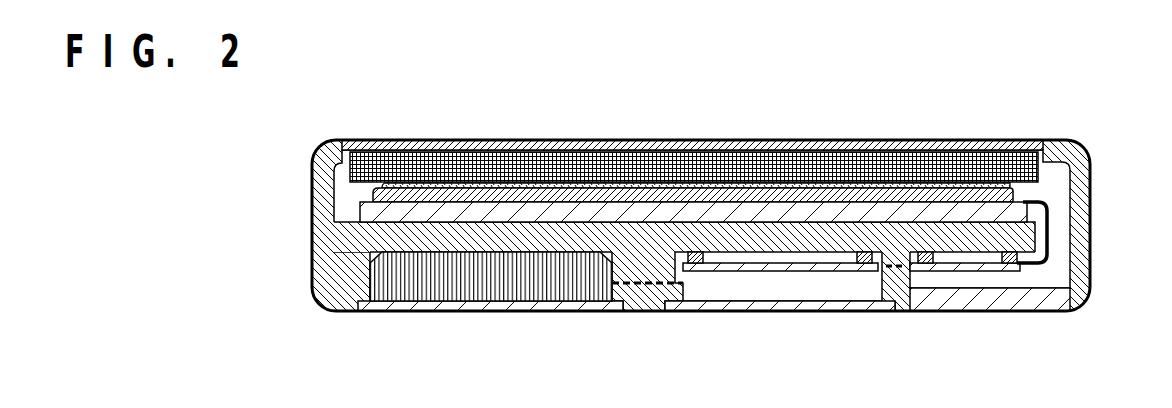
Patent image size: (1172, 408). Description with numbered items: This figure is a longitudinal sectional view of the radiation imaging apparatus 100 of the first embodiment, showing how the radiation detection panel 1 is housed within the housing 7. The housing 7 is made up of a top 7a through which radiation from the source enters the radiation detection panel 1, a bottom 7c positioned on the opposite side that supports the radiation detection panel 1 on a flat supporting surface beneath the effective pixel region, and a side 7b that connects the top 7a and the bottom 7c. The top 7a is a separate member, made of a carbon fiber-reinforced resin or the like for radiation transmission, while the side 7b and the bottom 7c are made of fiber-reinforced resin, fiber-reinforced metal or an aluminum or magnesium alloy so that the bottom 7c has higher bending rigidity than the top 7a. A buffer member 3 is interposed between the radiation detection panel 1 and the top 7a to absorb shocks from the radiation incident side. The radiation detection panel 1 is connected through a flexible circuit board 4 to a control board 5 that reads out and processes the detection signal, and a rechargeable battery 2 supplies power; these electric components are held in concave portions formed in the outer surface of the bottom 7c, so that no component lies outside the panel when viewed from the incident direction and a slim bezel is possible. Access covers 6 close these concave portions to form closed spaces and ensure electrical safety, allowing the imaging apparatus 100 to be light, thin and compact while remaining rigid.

The radiation imaging apparatus 100 is at (275, 268).
The radiation detection panel 1 is at (358, 213).
The rechargeable battery 2 is at (483, 273).
The buffer member 3 is at (607, 160).
The flexible circuit board 4 is at (1043, 264).
The control board 5 is at (855, 271).
The access cover 6 is at (693, 312).
The housing 7 is at (707, 169).
The top 7a is at (955, 140).
The side 7b is at (1097, 187).
The bottom 7c is at (682, 197).